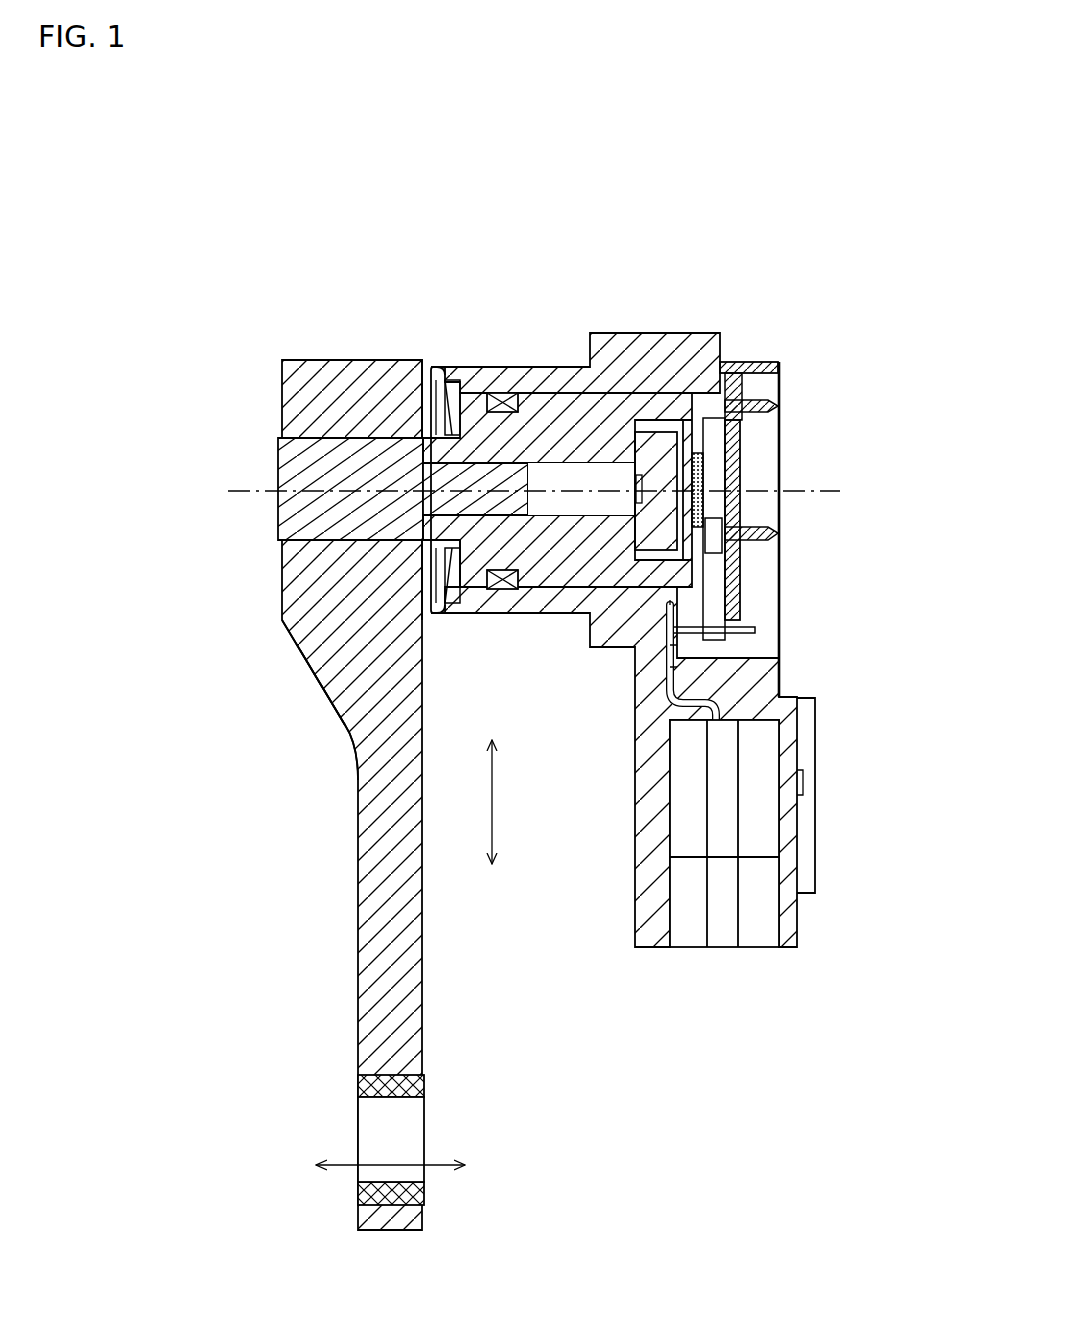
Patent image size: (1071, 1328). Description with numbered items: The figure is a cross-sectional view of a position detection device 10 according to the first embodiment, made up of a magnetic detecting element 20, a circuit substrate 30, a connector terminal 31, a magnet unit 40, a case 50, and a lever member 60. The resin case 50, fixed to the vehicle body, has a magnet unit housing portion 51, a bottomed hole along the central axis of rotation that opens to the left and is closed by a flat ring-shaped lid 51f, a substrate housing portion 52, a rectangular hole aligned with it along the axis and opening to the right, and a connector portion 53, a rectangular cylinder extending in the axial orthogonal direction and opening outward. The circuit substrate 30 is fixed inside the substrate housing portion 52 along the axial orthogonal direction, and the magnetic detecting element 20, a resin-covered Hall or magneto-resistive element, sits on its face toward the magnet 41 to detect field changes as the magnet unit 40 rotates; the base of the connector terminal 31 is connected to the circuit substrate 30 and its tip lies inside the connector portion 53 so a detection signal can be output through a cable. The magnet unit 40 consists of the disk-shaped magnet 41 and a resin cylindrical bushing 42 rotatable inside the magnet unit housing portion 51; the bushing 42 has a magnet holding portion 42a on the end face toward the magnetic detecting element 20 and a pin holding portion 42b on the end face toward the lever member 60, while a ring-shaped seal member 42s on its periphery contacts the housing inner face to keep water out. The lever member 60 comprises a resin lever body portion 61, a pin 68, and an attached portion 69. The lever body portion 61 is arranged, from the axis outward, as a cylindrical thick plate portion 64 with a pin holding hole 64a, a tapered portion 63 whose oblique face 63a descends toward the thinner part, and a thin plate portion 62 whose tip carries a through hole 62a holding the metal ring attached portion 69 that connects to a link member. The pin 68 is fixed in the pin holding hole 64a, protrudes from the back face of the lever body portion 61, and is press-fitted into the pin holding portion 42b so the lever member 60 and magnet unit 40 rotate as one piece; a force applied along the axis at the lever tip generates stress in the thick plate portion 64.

The position detection device 10 is at (866, 200).
The magnetic detecting element 20 is at (710, 475).
The circuit substrate 30 is at (735, 575).
The connector terminal 31 is at (718, 772).
The magnet unit 40 is at (690, 268).
The magnet 41 is at (650, 440).
The bushing 42 is at (621, 407).
The magnet holding portion 42a is at (598, 600).
The pin holding portion 42b is at (462, 592).
The seal member 42s is at (500, 393).
The case 50 is at (468, 362).
The magnet unit housing portion 51 is at (515, 380).
The lid 51f is at (432, 372).
The substrate housing portion 52 is at (758, 435).
The connector portion 53 is at (753, 934).
The lever member 60 is at (287, 358).
The lever body portion 61 is at (100, 573).
The thin plate portion 62 is at (382, 838).
The through hole 62a is at (398, 1097).
The tapered portion 63 is at (340, 630).
The oblique face 63a is at (325, 706).
The thick plate portion 64 is at (320, 582).
The pin holding hole 64a is at (335, 448).
The pin 68 is at (330, 516).
The attached portion 69 is at (358, 1086).